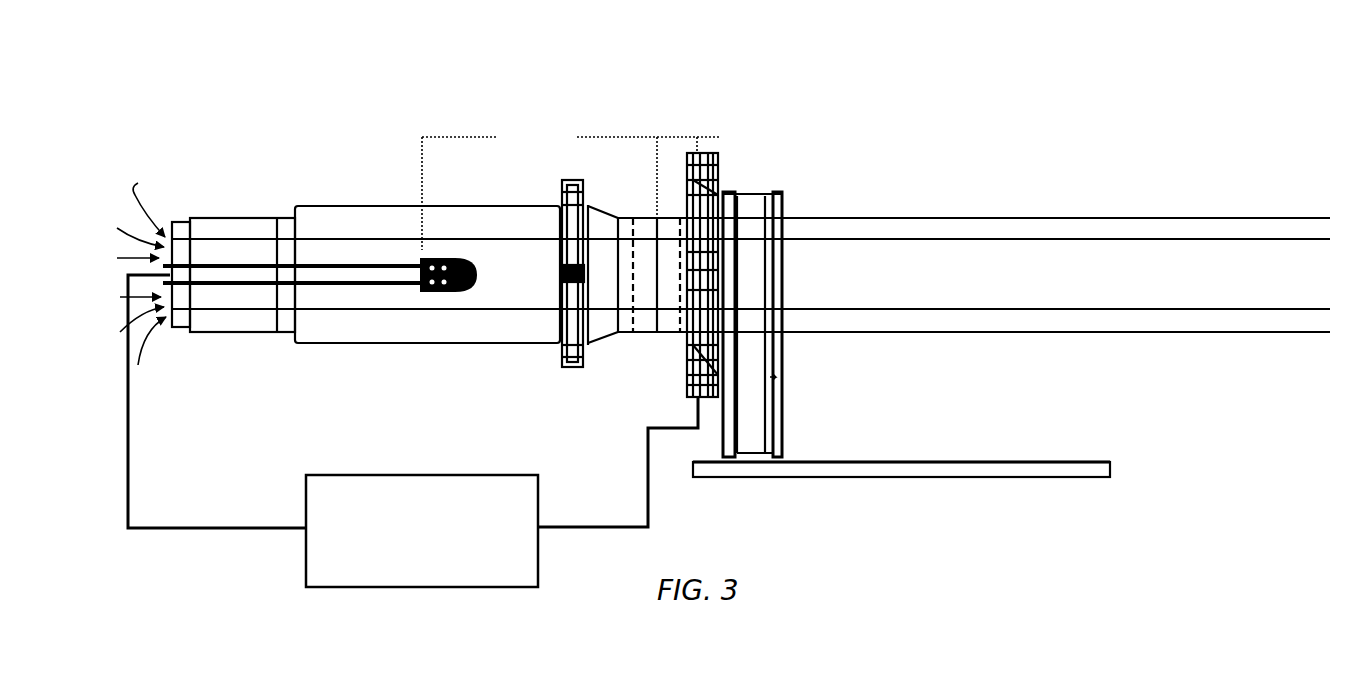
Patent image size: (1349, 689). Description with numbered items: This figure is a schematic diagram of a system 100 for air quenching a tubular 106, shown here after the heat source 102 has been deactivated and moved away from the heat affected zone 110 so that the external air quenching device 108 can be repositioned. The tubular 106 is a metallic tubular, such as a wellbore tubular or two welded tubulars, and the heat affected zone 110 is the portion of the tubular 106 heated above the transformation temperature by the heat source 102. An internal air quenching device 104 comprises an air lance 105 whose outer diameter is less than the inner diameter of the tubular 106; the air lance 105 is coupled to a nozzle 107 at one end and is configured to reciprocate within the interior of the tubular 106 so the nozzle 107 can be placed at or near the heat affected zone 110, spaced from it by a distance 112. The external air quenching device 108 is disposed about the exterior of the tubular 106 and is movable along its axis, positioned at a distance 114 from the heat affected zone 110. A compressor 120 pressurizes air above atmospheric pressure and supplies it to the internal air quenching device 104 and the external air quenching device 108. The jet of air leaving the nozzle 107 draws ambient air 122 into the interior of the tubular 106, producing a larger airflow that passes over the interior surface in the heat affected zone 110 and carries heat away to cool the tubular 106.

The system 100 is at (361, 75).
The heat source 102 is at (560, 368).
The internal air quenching device 104 is at (415, 300).
The air lance 105 is at (245, 285).
The tubular 106 is at (315, 206).
The nozzle 107 is at (473, 283).
The external air quenching device 108 is at (680, 201).
The heat affected zone 110 is at (647, 330).
The distance 112 is at (487, 188).
The distance 114 is at (673, 137).
The compressor 120 is at (405, 563).
The ambient air 122 is at (107, 242).